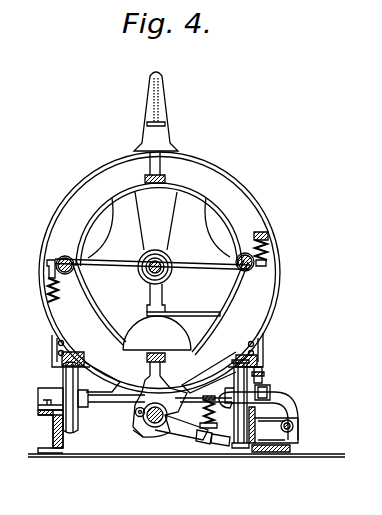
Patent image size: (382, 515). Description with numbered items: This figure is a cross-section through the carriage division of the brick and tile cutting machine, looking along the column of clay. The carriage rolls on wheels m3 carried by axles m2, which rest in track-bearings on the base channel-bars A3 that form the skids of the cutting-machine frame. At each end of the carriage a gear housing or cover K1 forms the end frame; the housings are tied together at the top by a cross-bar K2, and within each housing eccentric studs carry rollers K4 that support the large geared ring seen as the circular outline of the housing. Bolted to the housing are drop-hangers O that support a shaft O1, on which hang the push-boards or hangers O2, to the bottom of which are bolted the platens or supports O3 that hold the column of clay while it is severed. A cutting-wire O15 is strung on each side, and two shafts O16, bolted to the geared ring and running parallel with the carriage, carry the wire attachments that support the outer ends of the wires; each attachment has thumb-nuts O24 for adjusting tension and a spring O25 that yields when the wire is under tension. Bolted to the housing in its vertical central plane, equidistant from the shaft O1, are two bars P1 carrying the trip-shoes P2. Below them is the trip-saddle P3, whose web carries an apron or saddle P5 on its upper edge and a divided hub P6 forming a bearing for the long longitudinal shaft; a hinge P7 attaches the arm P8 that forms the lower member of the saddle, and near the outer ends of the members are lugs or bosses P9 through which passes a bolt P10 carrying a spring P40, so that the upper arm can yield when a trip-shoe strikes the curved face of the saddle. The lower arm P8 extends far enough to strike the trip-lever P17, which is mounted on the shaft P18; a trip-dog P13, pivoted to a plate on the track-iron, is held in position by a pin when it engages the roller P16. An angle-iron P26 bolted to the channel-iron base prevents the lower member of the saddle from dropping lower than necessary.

The cross-bar K2 is at (165, 95).
The rollers K4 is at (60, 345).
The gear housing or cover K1 is at (38, 398).
The trip-shoe P2 is at (166, 158).
The bar P1 is at (168, 178).
The trip-saddle P3 is at (195, 390).
The apron or saddle P5 is at (170, 438).
The divided hub P6 is at (160, 405).
The hinge P7 is at (132, 413).
The arm P8 is at (133, 432).
The lugs or bosses P9 is at (181, 427).
The bolt P10 is at (204, 444).
The spring P40 is at (222, 446).
The trip-dog P13 is at (264, 380).
The roller P16 is at (270, 395).
The trip-lever P17 is at (300, 412).
The shaft P18 is at (294, 426).
The angle-iron P26 is at (243, 448).
The drop-hangers O is at (154, 244).
The shaft O1 is at (170, 260).
The push-boards or hangers O2 is at (148, 295).
The platens or supports O3 is at (176, 310).
The wire O15 is at (117, 262).
The shaft O16 is at (68, 250).
The thumb-nuts O24 is at (262, 232).
The spring O25 is at (267, 248).
The channel-bars A3 is at (53, 433).
The axles m2 is at (108, 389).
The wheels m3 is at (61, 376).